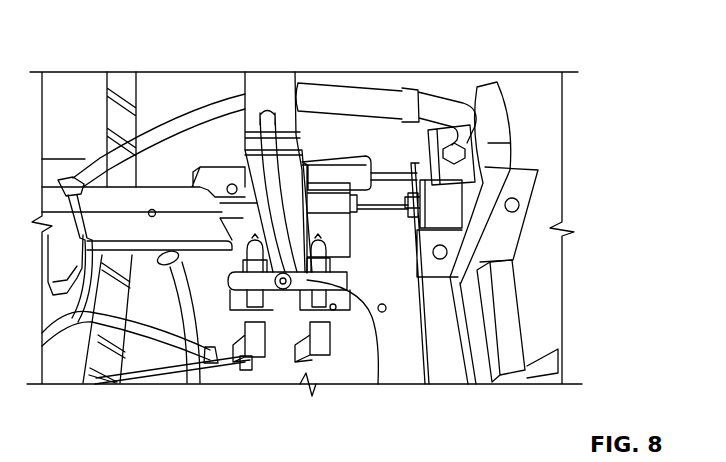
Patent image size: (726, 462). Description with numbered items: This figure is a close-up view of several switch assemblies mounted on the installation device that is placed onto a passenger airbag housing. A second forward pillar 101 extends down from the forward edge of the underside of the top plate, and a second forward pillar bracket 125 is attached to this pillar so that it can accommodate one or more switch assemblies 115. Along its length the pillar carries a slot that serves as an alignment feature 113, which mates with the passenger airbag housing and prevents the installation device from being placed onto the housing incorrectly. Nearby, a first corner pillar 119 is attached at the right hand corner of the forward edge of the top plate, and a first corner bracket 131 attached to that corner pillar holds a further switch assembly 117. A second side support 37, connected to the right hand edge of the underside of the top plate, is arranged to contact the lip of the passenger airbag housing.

The second side support 37 is at (536, 277).
The second forward pillar 101 is at (281, 85).
The alignment feature 113 is at (270, 110).
The switch assembly 115 is at (227, 383).
The switch assembly 117 is at (450, 210).
The first corner pillar 119 is at (505, 153).
The second forward pillar bracket 125 is at (378, 384).
The first corner bracket 131 is at (463, 173).